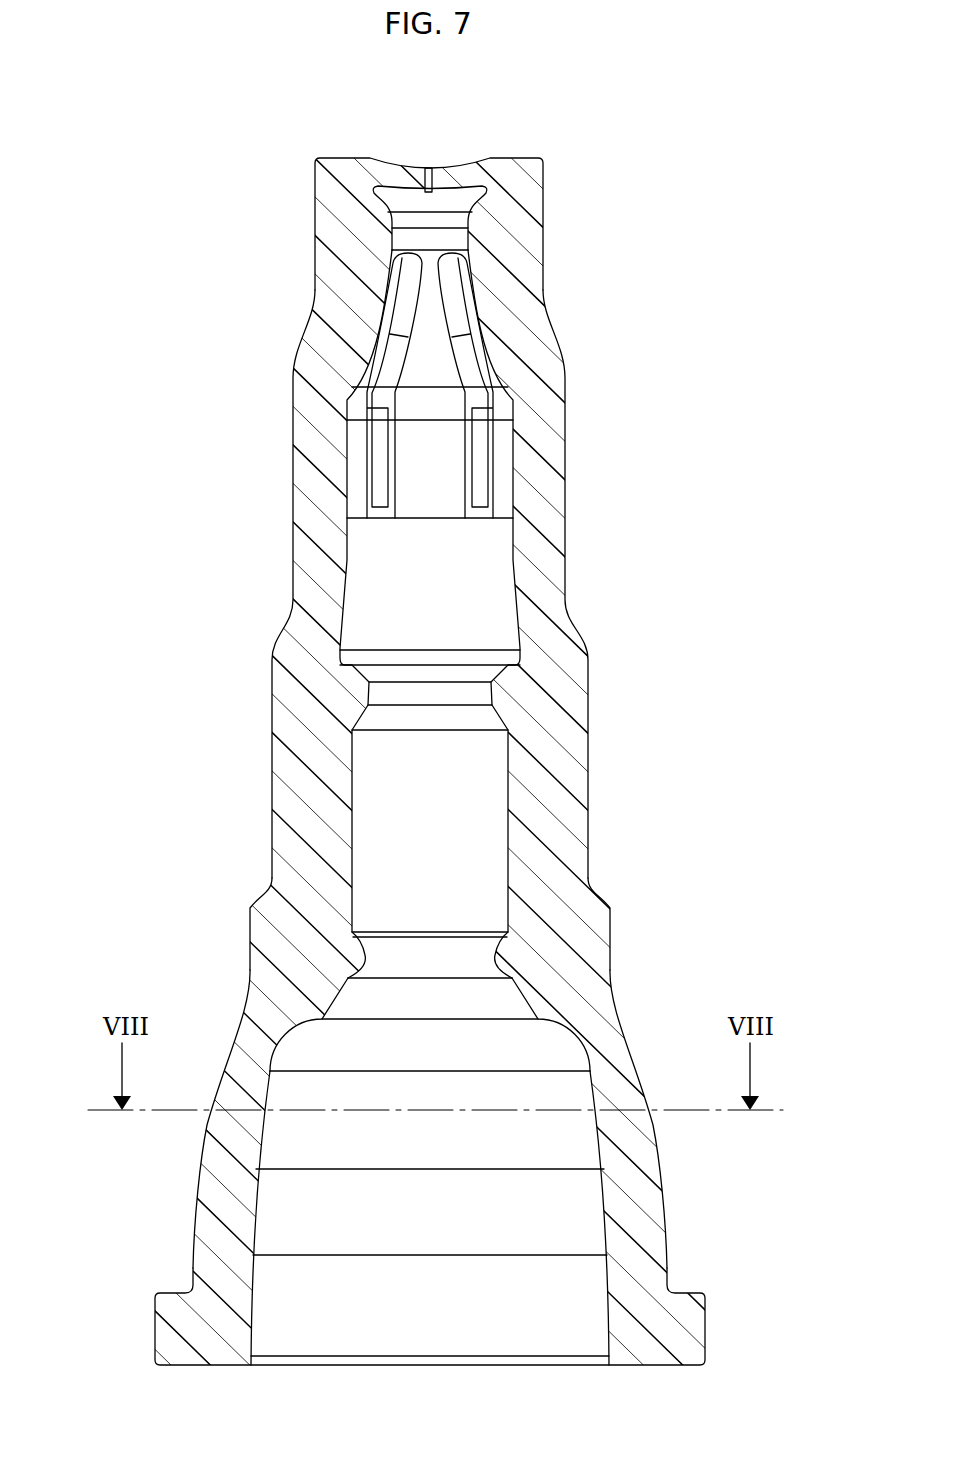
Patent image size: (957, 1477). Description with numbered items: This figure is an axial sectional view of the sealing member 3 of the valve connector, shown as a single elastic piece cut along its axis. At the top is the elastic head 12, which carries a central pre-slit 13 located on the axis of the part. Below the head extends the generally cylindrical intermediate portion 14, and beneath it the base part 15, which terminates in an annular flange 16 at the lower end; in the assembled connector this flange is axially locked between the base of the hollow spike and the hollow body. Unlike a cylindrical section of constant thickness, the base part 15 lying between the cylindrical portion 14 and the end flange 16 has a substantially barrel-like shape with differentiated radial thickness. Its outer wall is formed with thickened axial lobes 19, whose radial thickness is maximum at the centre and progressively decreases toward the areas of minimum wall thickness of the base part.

The sealing member 3 is at (495, 738).
The elastic head 12 is at (527, 158).
The central pre-slit 13 is at (428, 160).
The intermediate portion 14 is at (567, 527).
The base part 15 is at (218, 1002).
The annular flange 16 is at (187, 1334).
The thickened axial lobes 19 is at (199, 1197).